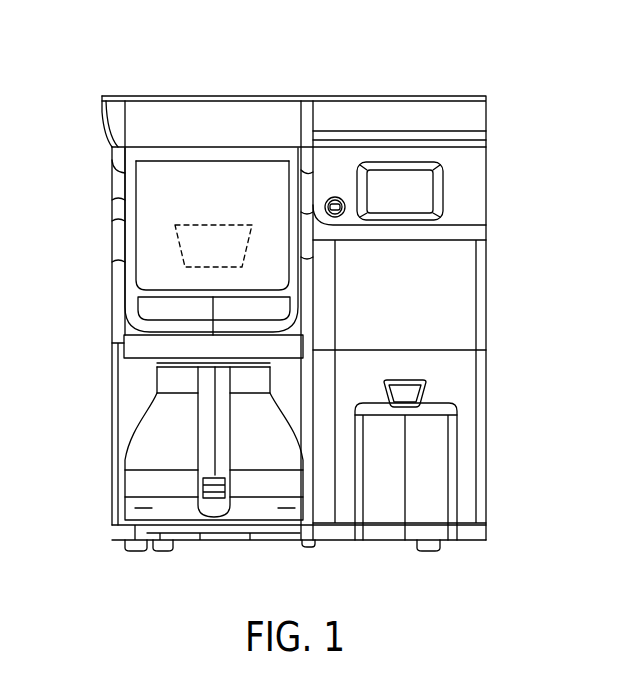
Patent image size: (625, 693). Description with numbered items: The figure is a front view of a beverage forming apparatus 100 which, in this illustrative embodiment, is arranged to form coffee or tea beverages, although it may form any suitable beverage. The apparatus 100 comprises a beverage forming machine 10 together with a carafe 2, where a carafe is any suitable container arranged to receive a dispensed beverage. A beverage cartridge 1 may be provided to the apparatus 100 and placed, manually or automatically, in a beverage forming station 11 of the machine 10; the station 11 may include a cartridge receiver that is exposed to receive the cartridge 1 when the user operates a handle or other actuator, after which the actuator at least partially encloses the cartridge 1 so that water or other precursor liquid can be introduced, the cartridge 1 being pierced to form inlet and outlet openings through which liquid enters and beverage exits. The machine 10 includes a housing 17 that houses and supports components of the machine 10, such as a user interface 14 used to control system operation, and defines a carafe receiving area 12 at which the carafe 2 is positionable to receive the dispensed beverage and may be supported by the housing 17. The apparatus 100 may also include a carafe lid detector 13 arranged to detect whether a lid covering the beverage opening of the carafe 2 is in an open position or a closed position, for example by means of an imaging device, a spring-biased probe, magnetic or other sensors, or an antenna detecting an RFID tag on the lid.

The beverage forming apparatus 100 is at (115, 63).
The beverage forming machine 10 is at (500, 190).
The beverage forming station 11 is at (91, 202).
The carafe receiving area 12 is at (95, 525).
The carafe lid detector 13 is at (155, 350).
The user interface 14 is at (407, 203).
The housing 17 is at (490, 400).
The beverage cartridge 1 is at (208, 225).
The carafe 2 is at (157, 437).